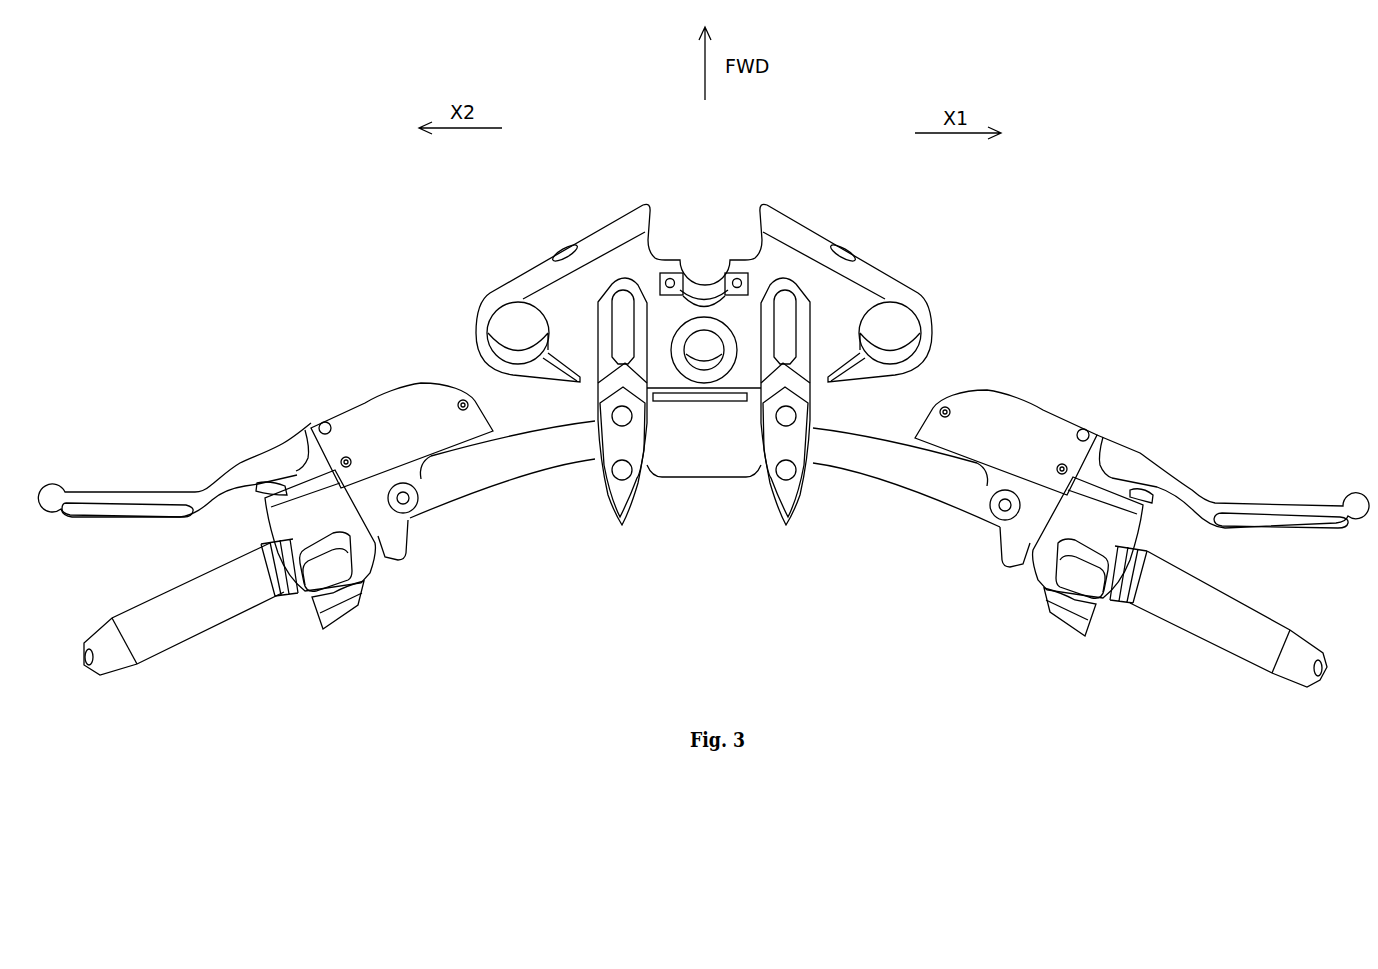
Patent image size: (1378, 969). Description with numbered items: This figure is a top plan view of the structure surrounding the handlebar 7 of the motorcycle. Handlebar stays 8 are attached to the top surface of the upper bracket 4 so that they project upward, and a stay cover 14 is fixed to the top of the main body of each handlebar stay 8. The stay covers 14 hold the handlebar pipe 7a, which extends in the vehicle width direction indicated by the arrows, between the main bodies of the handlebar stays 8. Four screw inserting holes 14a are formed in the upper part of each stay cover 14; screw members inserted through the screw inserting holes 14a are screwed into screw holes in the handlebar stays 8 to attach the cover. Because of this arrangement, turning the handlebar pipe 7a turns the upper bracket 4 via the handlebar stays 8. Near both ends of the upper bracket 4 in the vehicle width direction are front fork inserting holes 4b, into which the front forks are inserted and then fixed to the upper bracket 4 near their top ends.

The upper bracket 4 is at (484, 338).
The front fork inserting hole 4b is at (517, 312).
The handlebar 7 is at (534, 519).
The handlebar pipe 7a is at (863, 472).
The handlebar stay 8 is at (603, 302).
The stay cover 14 is at (795, 505).
The screw inserting hole 14a is at (838, 486).